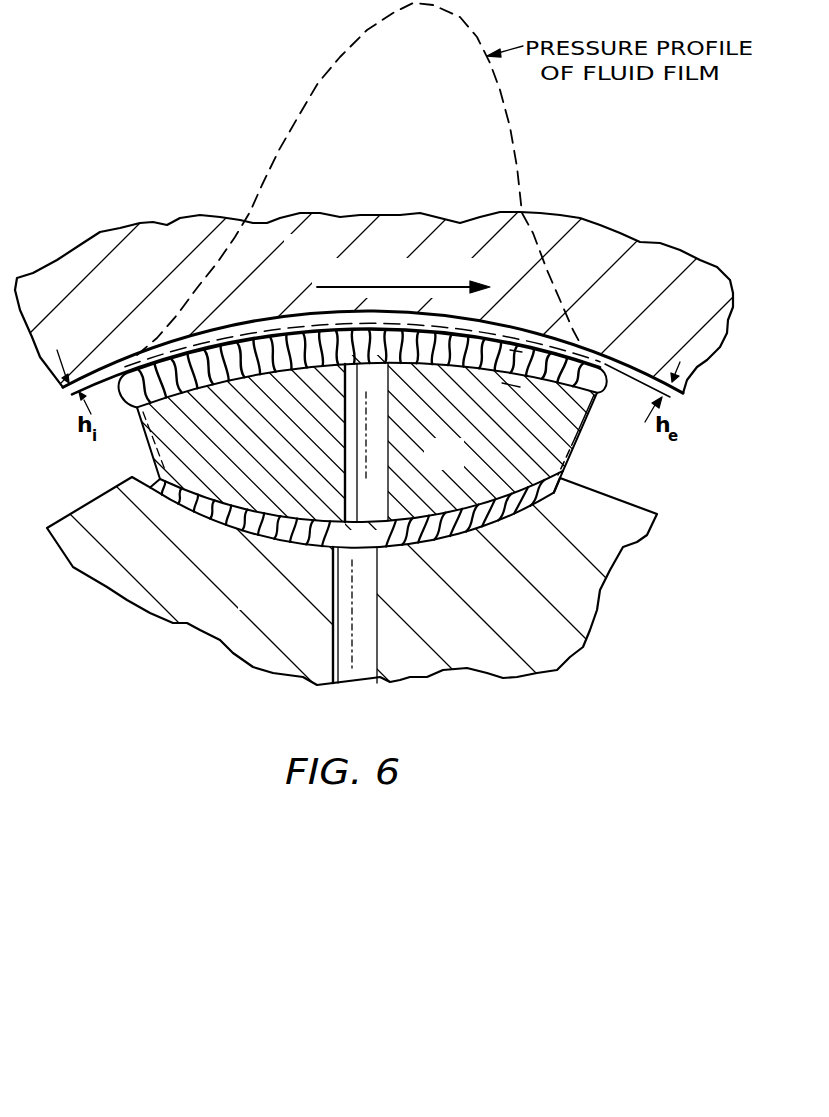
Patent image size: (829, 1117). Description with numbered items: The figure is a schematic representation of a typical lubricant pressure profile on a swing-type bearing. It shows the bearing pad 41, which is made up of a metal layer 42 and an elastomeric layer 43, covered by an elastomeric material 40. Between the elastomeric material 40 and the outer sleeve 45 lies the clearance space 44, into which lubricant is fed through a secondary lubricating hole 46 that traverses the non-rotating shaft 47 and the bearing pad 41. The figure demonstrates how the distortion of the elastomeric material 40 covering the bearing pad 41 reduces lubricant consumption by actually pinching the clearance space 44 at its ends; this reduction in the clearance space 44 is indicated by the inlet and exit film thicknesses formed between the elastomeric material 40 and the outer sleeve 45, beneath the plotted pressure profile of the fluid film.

The elastomeric material 40 is at (601, 384).
The bearing pad 41 is at (577, 443).
The metal layer 42 is at (459, 465).
The elastomeric layer 43 is at (490, 516).
The clearance space 44 is at (483, 332).
The outer sleeve 45 is at (320, 261).
The secondary lubricating hole 46 is at (350, 465).
The non-rotating shaft 47 is at (272, 604).